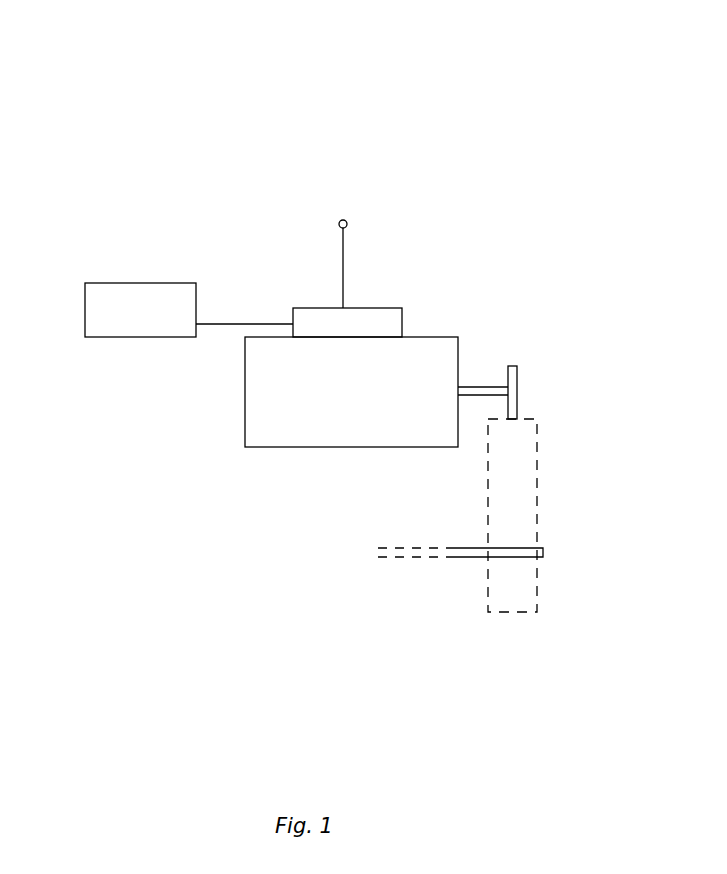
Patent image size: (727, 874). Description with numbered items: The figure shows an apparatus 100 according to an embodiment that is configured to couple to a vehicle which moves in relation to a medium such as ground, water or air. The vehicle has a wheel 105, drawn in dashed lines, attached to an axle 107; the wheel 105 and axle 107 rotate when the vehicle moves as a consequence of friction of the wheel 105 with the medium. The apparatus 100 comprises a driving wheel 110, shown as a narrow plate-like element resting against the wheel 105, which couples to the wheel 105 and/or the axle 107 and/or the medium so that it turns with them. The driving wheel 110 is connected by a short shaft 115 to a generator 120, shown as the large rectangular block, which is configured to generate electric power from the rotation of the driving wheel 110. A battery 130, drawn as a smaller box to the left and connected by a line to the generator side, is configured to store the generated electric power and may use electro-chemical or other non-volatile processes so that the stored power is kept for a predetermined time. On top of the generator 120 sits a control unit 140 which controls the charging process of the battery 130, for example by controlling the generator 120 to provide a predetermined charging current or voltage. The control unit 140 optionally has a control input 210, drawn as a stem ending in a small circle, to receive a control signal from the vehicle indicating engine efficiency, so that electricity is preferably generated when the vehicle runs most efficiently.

The apparatus 100 is at (556, 82).
The wheel 105 is at (530, 470).
The axle 107 is at (545, 551).
The driving wheel 110 is at (517, 375).
The shaft / connector 115 is at (465, 387).
The generator 120 is at (263, 443).
The battery 130 is at (117, 296).
The control unit 140 is at (393, 317).
The control input 210 is at (347, 222).